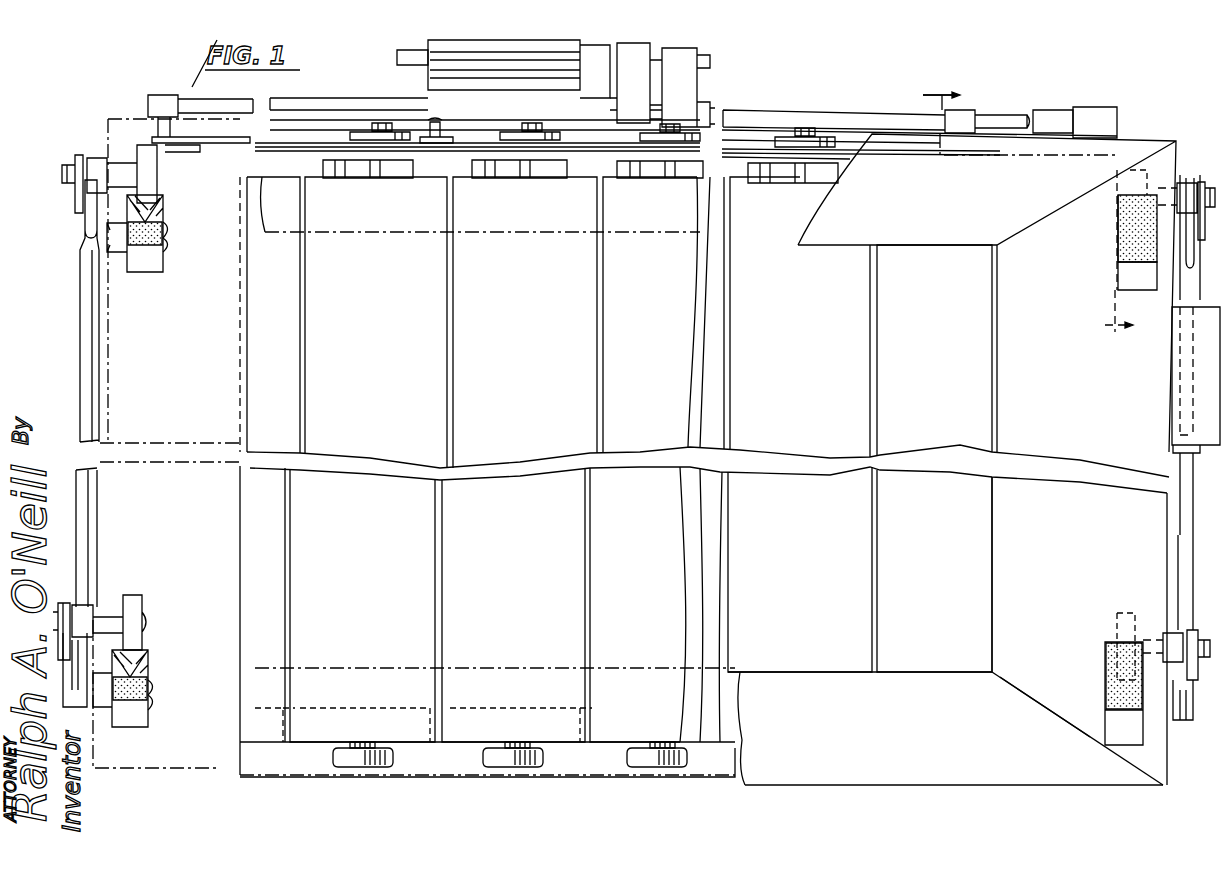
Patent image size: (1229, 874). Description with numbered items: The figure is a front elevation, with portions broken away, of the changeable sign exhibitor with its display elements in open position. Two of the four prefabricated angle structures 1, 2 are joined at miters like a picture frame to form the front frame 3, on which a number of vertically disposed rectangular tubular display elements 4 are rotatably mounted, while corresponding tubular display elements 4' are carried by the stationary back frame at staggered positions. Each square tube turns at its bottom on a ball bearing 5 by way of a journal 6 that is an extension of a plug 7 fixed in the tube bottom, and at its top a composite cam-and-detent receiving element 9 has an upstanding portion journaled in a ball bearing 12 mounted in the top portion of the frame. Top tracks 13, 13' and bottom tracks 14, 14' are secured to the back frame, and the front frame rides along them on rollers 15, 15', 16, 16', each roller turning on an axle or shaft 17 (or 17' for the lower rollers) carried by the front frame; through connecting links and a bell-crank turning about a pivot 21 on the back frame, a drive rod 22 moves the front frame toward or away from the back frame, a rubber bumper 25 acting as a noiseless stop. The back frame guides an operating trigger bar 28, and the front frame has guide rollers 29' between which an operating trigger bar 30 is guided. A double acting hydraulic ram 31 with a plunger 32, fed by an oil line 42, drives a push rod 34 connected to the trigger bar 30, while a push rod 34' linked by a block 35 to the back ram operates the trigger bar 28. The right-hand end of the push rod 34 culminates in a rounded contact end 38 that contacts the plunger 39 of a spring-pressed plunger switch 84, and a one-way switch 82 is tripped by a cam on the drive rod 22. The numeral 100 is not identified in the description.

The prefabricated angle structure 1 is at (945, 728).
The prefabricated angle structure 2 is at (1077, 696).
The front frame 3 is at (993, 520).
The rectangular tubular display element 4 is at (575, 459).
The rectangular tubular display element 4' is at (641, 459).
The ball bearing 5 is at (350, 765).
The journal 6 is at (360, 738).
The plug 7 is at (290, 705).
The composite cam-and-detent receiving element 9 is at (1016, 217).
The ball bearing 12 is at (830, 150).
The top track 13 is at (1097, 236).
The top track 13' is at (137, 254).
The bottom track 14 is at (1095, 693).
The bottom track 14' is at (148, 679).
The roller 15 is at (998, 279).
The roller 15' is at (133, 179).
The roller 16 is at (1100, 633).
The roller 16' is at (146, 611).
The axle or shaft 17 is at (1169, 412).
The axle or shaft 17' is at (95, 612).
The pivot 21 is at (1012, 688).
The drive rod 22 is at (78, 315).
The rubber bumper 25 is at (1118, 248).
The operating trigger bar 28 is at (175, 130).
The guide roller 29' is at (423, 170).
The operating trigger bar 30 is at (290, 176).
The double acting hydraulic ram 31 is at (428, 80).
The plunger 32 is at (708, 64).
The push rod 34 is at (777, 107).
The push rod 34' is at (303, 95).
The block 35 is at (700, 92).
The rounded contact end 38 is at (997, 115).
The plunger 39 is at (1035, 112).
The oil line 42 is at (395, 56).
The one-way switch 82 is at (1172, 390).
The spring-pressed plunger switch 84 is at (1105, 118).
The packing 100 is at (166, 242).